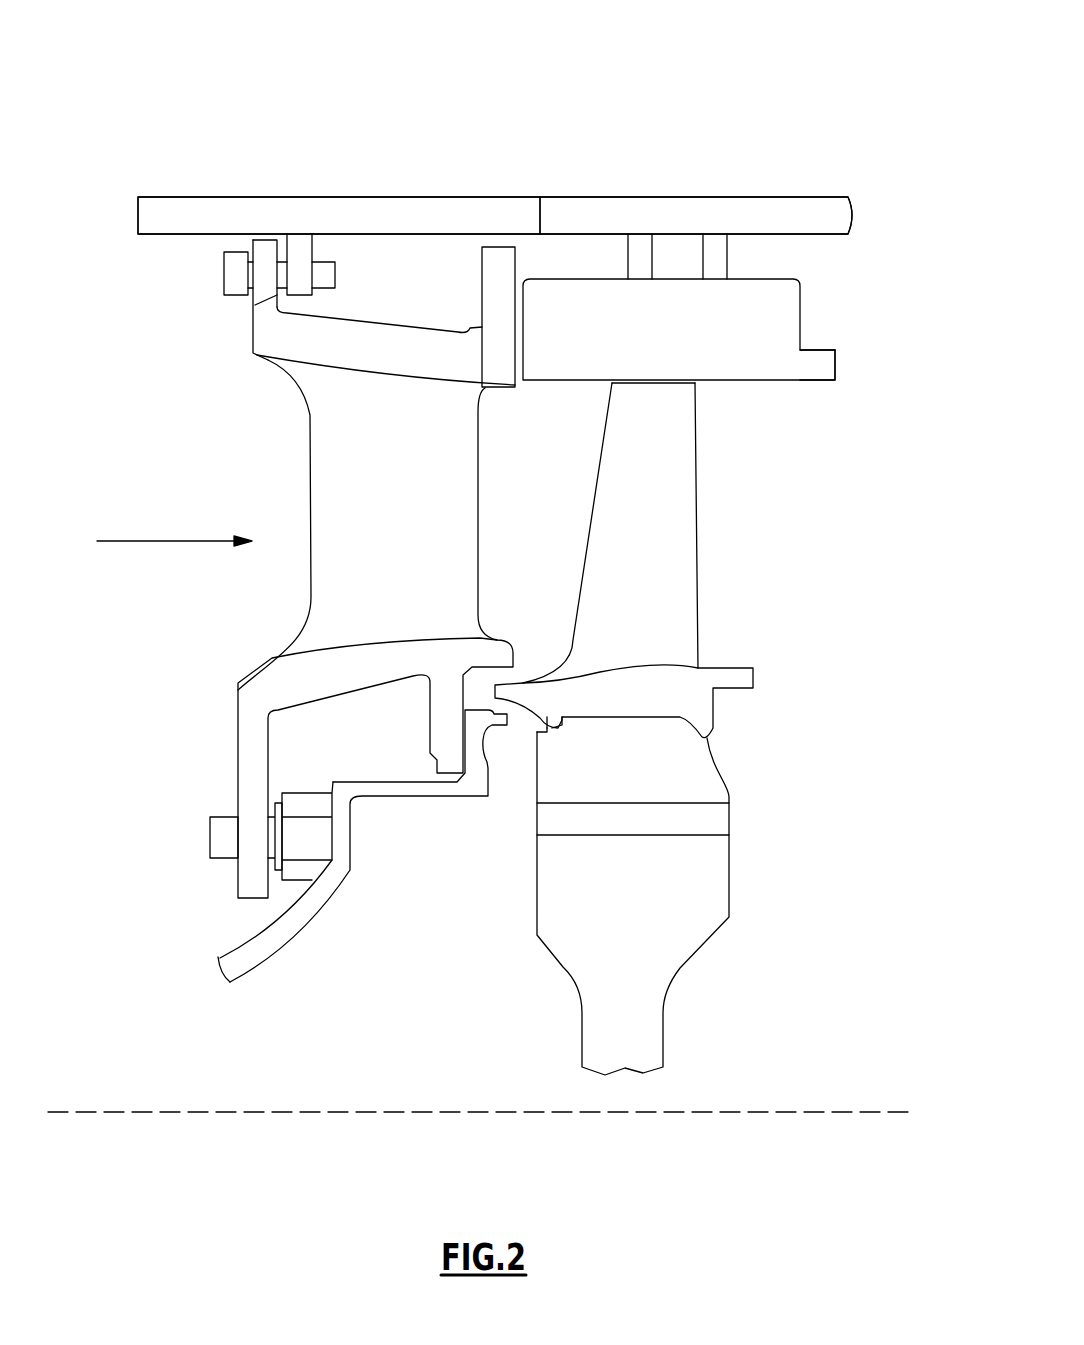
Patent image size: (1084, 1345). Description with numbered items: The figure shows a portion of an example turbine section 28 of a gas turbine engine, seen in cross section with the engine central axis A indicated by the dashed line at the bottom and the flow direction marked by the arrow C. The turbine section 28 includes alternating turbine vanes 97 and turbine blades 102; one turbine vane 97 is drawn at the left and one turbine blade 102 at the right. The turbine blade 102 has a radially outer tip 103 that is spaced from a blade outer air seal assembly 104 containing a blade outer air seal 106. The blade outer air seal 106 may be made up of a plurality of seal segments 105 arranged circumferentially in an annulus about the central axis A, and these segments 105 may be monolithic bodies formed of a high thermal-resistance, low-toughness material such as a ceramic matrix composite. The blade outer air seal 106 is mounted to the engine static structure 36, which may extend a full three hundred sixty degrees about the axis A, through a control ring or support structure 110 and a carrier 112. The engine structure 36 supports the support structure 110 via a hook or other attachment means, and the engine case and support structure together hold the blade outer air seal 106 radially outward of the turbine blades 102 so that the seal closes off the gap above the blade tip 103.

The turbine section 28 is at (779, 85).
The engine static structure 36 is at (203, 215).
The turbine vane 97 is at (483, 360).
The turbine blade 102 is at (683, 503).
The radially outer tip 103 is at (678, 385).
The blade outer air seal assembly 104 is at (852, 299).
The seal segment 105 is at (821, 357).
The blade outer air seal 106 is at (820, 370).
The support structure 110 is at (585, 210).
The carrier 112 is at (642, 260).
The core flow direction C is at (127, 541).
The central axis A is at (853, 1112).